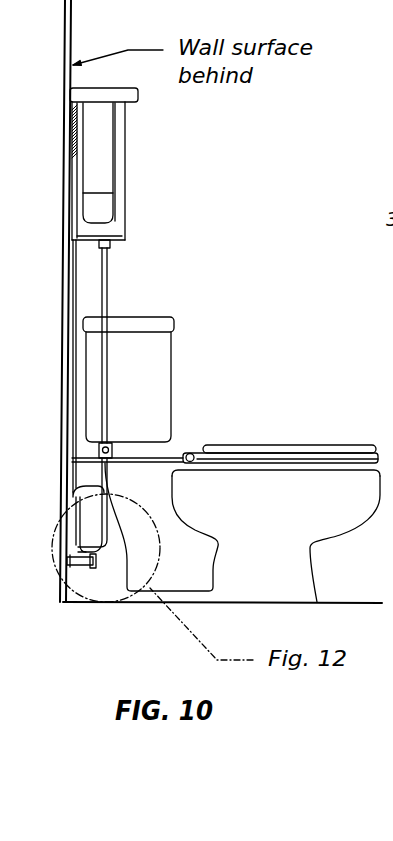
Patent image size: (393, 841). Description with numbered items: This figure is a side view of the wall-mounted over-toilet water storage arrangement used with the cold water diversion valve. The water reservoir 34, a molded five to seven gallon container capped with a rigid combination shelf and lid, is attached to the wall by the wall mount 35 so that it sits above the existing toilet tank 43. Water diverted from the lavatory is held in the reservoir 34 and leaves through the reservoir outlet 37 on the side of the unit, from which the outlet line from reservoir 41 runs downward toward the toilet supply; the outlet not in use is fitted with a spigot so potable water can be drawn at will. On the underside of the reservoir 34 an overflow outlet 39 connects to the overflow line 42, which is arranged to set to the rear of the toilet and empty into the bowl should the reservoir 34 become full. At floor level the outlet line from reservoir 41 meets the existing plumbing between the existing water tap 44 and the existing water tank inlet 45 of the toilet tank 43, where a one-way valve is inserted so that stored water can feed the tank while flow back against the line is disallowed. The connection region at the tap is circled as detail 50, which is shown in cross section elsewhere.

The water reservoir 34 is at (99, 163).
The wall mount 35 is at (76, 129).
The reservoir outlet 37 is at (109, 245).
The overflow outlet 39 is at (86, 237).
The outlet line from reservoir 41 is at (109, 302).
The overflow line 42 is at (78, 292).
The existing toilet tank 43 is at (145, 400).
The existing water tap 44 is at (83, 572).
The existing water tank inlet 45 is at (120, 446).
The detail region of Fig. 12 50 is at (84, 540).